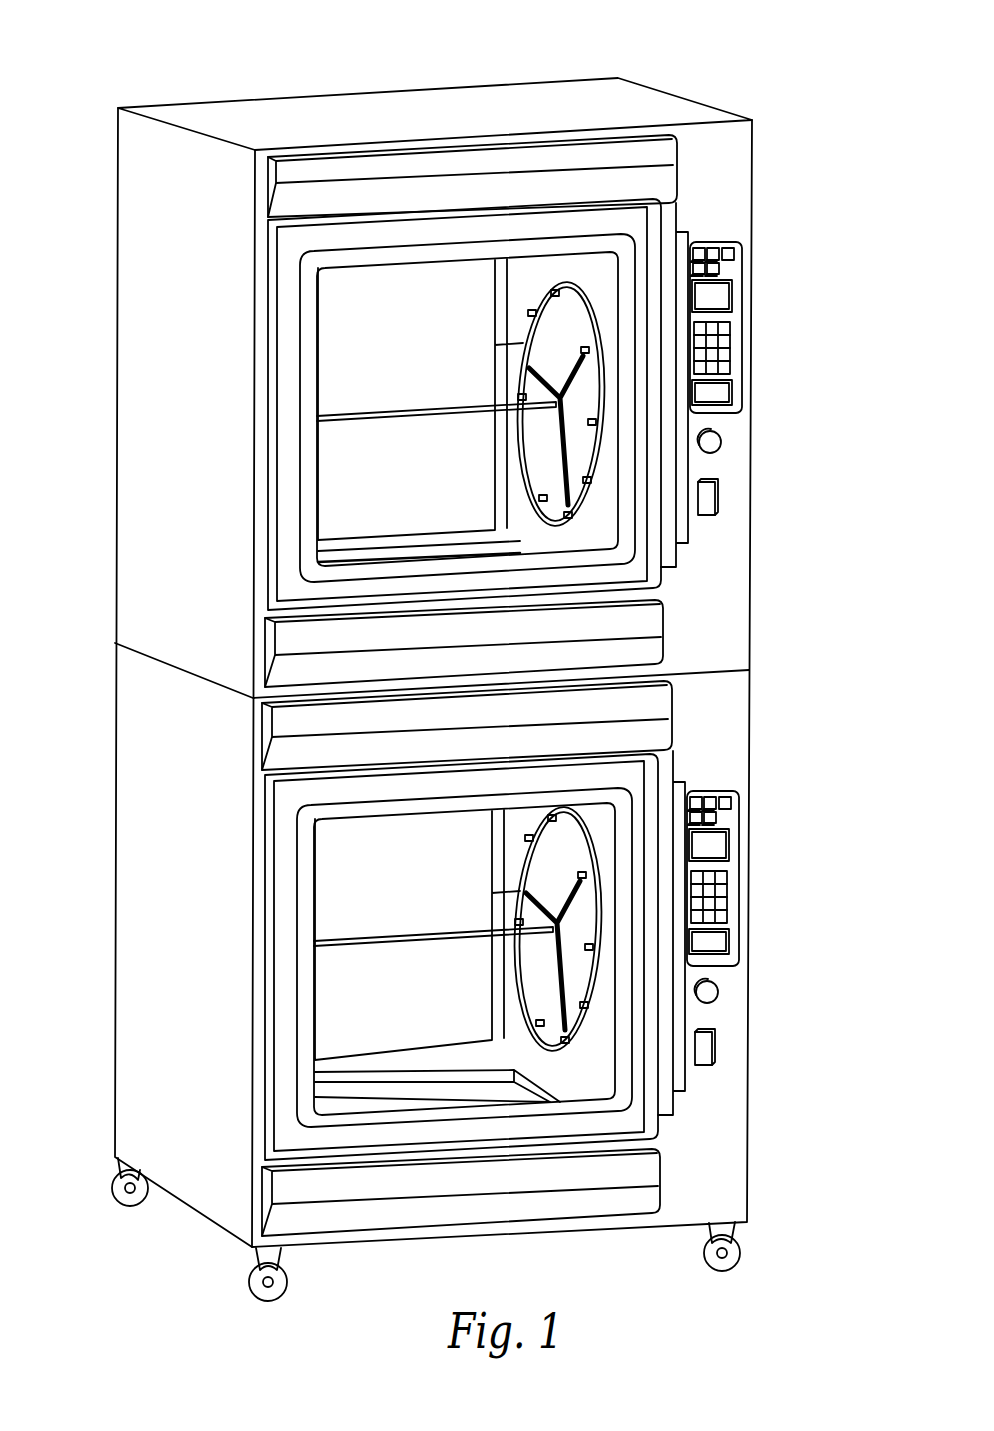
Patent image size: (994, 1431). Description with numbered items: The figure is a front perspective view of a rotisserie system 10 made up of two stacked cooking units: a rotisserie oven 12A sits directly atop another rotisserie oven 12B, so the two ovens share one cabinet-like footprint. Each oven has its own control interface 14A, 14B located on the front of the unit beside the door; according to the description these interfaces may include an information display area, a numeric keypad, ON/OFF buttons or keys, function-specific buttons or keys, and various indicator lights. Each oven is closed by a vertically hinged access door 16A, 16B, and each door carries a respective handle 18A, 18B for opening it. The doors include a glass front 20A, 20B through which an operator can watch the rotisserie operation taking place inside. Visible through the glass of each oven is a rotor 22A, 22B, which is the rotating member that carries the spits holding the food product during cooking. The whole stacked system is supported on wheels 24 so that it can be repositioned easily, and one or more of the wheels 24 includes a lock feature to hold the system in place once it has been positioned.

The rotisserie system 10 is at (749, 75).
The rotisserie oven 12A is at (752, 155).
The rotisserie oven 12B is at (749, 705).
The control interface 14A is at (747, 240).
The control interface 14B is at (747, 788).
The vertically hinged access door 16A is at (720, 243).
The vertically hinged access door 16B is at (709, 811).
The handle 18A is at (697, 530).
The handle 18B is at (688, 1073).
The glass front 20A is at (332, 378).
The glass front 20B is at (330, 908).
The rotor 22A is at (523, 343).
The rotor 22B is at (517, 880).
The wheels 24 is at (228, 1271).